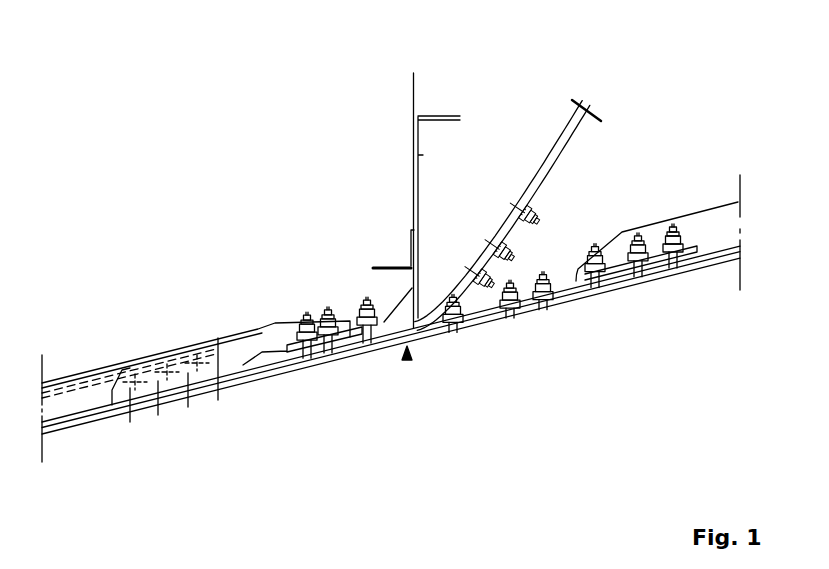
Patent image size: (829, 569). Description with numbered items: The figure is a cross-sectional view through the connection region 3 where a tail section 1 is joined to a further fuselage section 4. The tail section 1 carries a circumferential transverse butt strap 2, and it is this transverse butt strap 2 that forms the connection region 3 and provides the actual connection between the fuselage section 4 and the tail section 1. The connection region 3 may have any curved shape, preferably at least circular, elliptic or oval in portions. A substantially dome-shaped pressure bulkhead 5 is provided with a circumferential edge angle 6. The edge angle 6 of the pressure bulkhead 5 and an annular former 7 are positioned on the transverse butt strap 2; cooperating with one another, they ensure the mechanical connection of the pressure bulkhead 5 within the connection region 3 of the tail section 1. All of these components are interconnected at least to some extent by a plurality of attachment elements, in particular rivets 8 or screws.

The tail section 1 is at (716, 258).
The transverse butt strap 2 is at (445, 331).
The connection region 3 is at (407, 362).
The further fuselage section 4 is at (185, 376).
The pressure bulkhead 5 is at (510, 217).
The edge angle 6 is at (538, 193).
The annular former 7 is at (410, 246).
The rivets 8 is at (303, 332).